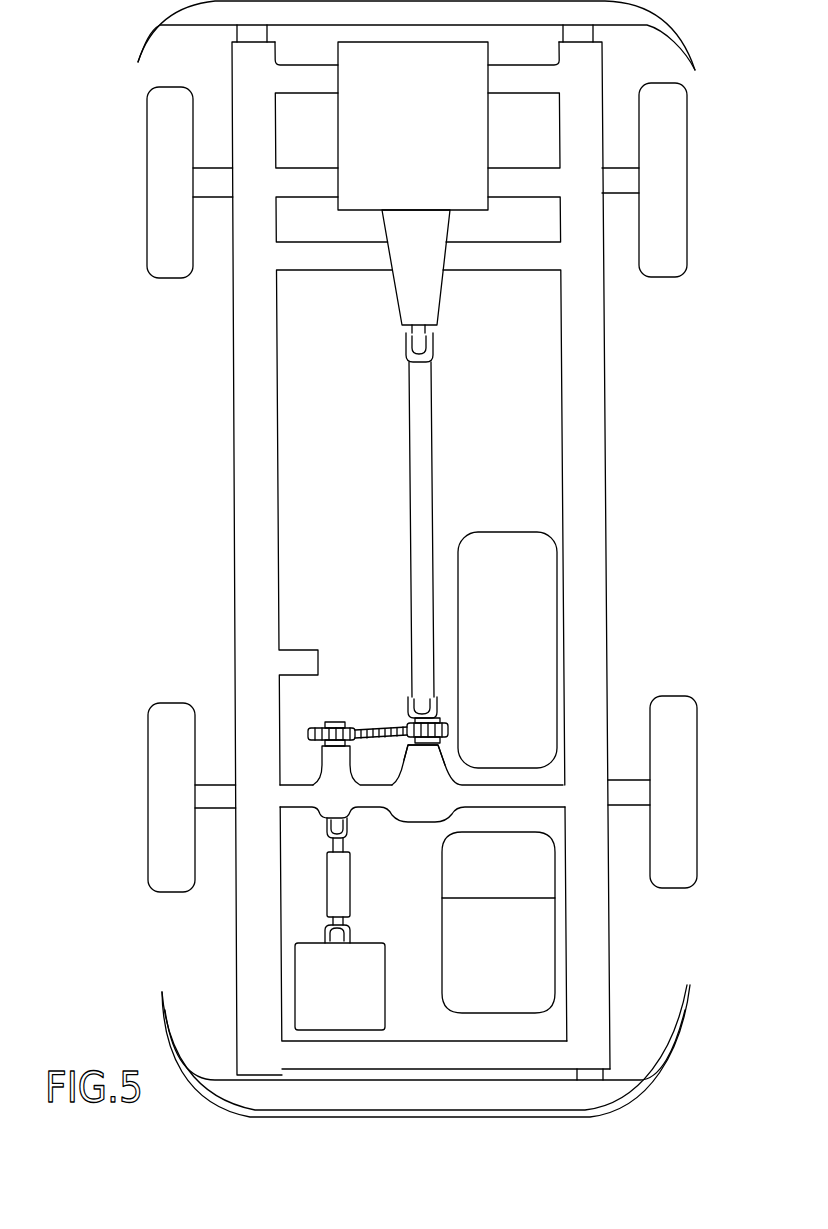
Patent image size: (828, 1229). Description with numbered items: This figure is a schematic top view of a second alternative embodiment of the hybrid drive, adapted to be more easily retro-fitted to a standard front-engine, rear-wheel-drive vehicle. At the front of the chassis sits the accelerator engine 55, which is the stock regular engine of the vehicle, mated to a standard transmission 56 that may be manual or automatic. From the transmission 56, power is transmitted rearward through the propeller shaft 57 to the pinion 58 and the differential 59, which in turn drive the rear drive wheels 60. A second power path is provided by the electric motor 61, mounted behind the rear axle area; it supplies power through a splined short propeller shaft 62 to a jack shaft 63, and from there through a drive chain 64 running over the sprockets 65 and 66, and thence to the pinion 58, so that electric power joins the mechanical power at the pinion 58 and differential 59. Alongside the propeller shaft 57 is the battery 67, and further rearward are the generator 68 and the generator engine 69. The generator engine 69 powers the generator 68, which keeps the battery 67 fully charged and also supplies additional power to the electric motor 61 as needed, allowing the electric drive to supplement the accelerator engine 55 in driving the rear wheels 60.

The accelerator engine 55 is at (427, 133).
The transmission 56 is at (398, 268).
The propeller shaft 57 is at (433, 460).
The pinion 58 is at (413, 717).
The differential 59 is at (406, 798).
The drive wheels 60 is at (148, 739).
The electric motor 61 is at (322, 1008).
The splined short propeller shaft 62 is at (351, 882).
The jack shaft 63 is at (336, 722).
The drive chain 64 is at (379, 738).
The sprocket 65 is at (343, 729).
The sprocket 66 is at (405, 724).
The battery 67 is at (489, 663).
The generator 68 is at (477, 878).
The generator engine 69 is at (477, 976).